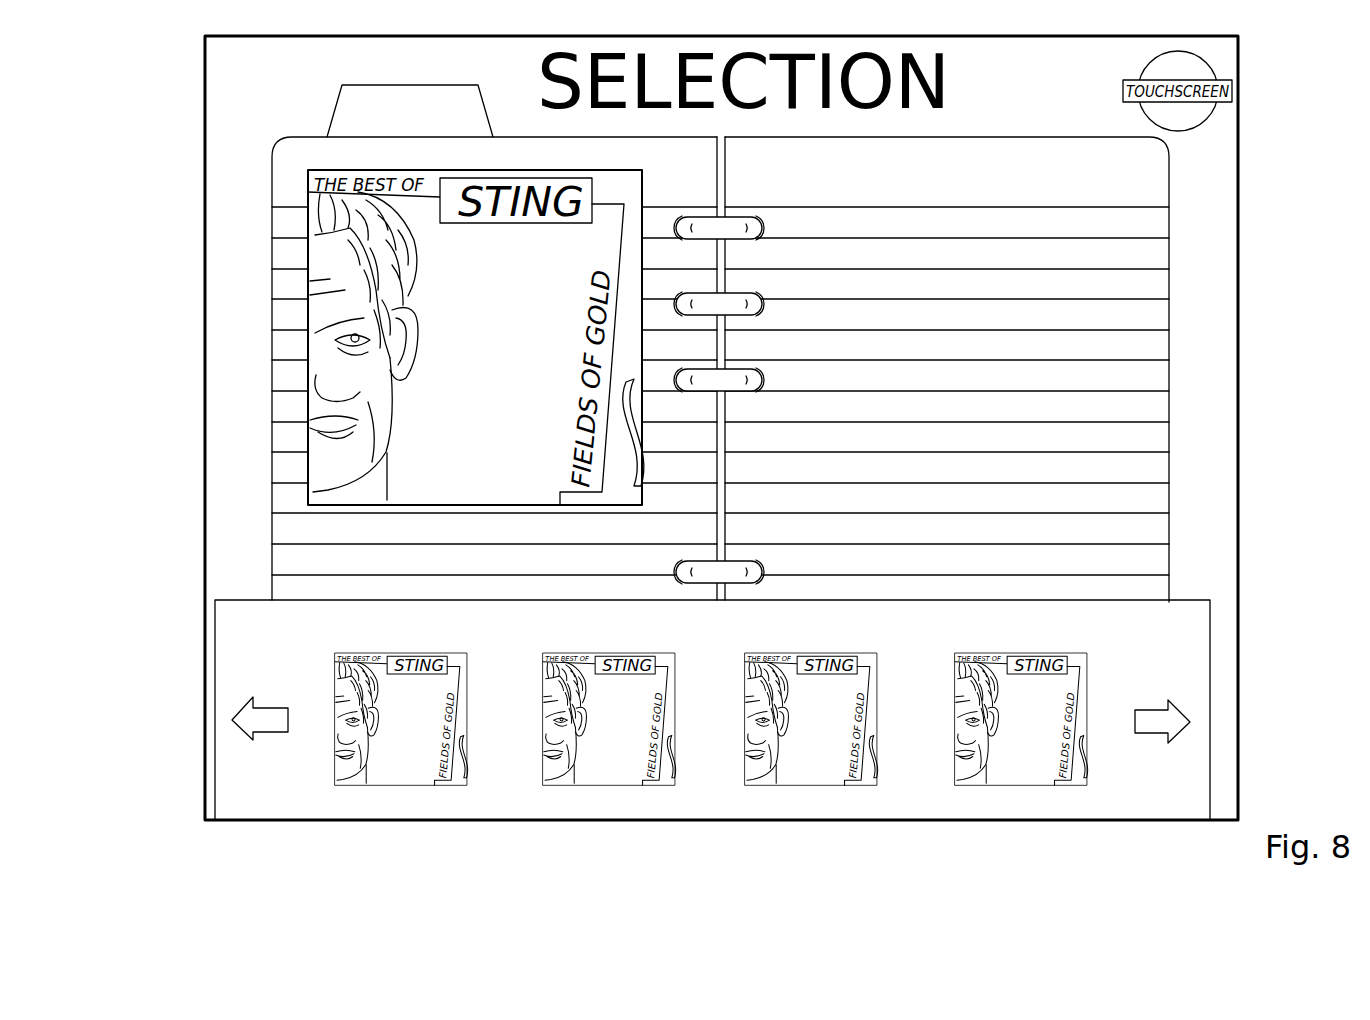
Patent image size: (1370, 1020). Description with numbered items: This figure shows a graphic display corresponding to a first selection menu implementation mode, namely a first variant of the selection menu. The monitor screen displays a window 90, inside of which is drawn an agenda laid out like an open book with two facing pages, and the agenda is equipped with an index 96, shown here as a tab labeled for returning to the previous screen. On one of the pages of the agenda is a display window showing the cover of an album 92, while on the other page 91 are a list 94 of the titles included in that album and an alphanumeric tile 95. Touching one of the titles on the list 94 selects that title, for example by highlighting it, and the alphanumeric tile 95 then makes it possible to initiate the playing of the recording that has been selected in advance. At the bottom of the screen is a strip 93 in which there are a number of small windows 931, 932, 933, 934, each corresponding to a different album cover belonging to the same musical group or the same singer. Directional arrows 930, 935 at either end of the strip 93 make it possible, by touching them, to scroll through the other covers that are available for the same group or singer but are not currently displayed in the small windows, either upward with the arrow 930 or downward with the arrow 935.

The window 90 is at (1246, 217).
The other page 91 is at (1157, 405).
The display window showing the cover of an album 92 is at (280, 153).
The strip 93 is at (1195, 658).
The list of titles 94 is at (973, 258).
The alphanumeric tile 95 is at (936, 558).
The index 96 is at (404, 92).
The directional arrow 930 is at (270, 722).
The small window 931 is at (400, 760).
The small window 932 is at (614, 760).
The small window 933 is at (812, 760).
The small window 934 is at (1022, 760).
The directional arrow 935 is at (1150, 725).